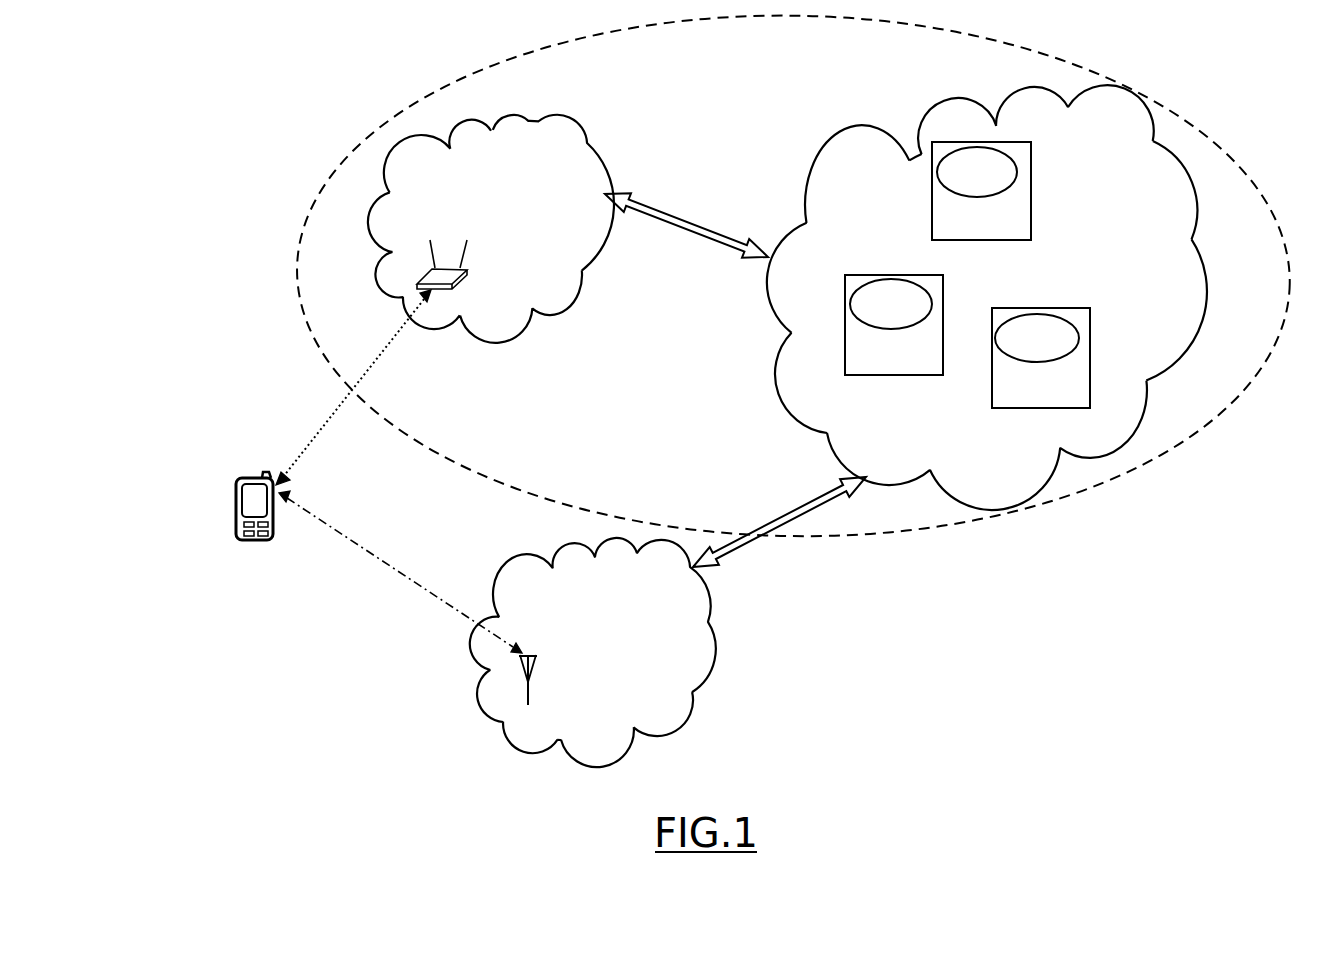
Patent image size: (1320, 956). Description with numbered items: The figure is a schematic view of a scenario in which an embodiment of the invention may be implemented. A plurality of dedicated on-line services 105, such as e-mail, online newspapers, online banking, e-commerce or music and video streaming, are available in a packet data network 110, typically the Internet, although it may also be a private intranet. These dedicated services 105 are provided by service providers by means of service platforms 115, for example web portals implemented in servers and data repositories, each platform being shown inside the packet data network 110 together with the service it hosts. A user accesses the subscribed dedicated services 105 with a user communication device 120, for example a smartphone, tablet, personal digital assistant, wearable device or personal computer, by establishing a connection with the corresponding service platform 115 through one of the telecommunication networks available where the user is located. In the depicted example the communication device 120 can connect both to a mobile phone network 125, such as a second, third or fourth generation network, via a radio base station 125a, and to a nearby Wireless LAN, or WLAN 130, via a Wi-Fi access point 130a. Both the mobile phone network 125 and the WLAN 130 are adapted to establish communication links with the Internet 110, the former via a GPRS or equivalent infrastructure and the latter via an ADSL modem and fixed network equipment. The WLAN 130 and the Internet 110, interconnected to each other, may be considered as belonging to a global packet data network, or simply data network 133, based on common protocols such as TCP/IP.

The dedicated on-line services 105 is at (962, 182).
The packet data network 110 is at (837, 180).
The service platforms 115 is at (947, 222).
The user communication device 120 is at (235, 513).
The mobile phone network 125 is at (516, 601).
The radio base station 125a is at (528, 692).
The WLAN 130 is at (411, 178).
The Wi-Fi access point 130a is at (417, 283).
The data network 133 is at (303, 220).